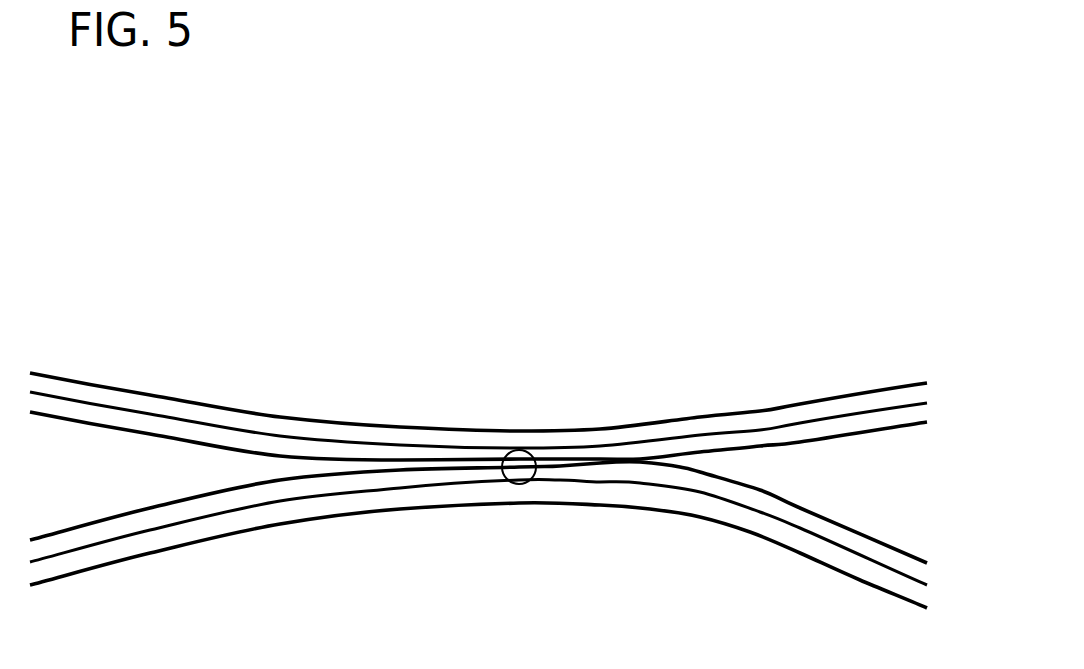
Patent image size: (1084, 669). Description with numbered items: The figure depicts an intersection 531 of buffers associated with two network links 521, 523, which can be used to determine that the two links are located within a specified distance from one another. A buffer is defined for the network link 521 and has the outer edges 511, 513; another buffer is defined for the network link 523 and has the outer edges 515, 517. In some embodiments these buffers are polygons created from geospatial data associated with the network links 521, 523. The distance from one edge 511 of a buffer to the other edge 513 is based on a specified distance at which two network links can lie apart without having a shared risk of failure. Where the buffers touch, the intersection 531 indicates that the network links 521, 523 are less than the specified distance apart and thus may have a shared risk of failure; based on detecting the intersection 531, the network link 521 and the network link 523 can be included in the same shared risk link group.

The outer edge 511 is at (132, 397).
The network link 521 is at (178, 422).
The outer edge 513 is at (102, 428).
The outer edge 515 is at (835, 527).
The network link 523 is at (868, 563).
The outer edge 517 is at (823, 567).
The intersection 531 is at (519, 484).